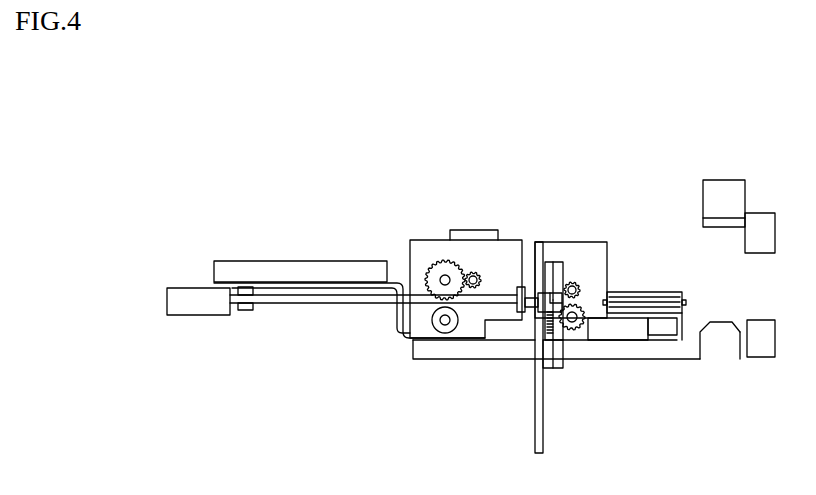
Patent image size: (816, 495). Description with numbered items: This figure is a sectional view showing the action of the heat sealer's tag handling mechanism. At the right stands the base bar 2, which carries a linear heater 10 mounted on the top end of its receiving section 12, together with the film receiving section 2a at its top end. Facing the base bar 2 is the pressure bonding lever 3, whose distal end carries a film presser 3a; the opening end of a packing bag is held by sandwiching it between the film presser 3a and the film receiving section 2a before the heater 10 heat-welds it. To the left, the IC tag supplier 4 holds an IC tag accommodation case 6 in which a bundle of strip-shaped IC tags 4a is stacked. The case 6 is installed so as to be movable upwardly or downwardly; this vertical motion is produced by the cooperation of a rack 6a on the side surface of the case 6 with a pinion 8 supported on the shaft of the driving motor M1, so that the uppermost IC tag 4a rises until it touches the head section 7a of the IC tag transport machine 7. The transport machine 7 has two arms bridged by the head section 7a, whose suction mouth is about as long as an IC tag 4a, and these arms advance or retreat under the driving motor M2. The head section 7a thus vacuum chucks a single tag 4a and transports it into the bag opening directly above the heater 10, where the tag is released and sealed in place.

The base bar 2 is at (672, 403).
The film receiving section 2a is at (766, 318).
The pressure bonding lever 3 is at (730, 180).
The film presser 3a is at (763, 213).
The IC tag supplier 4 is at (529, 408).
The IC tag 4a is at (562, 347).
The IC tag accommodation case 6 is at (540, 360).
The rack 6a is at (565, 278).
The IC tag transport machine 7 is at (344, 302).
The head section 7a is at (552, 293).
The pinion 8 is at (582, 318).
The linear heater 10 is at (712, 320).
The receiving section 12 is at (725, 345).
The driving motor M1 is at (552, 262).
The driving motor M2 is at (439, 240).